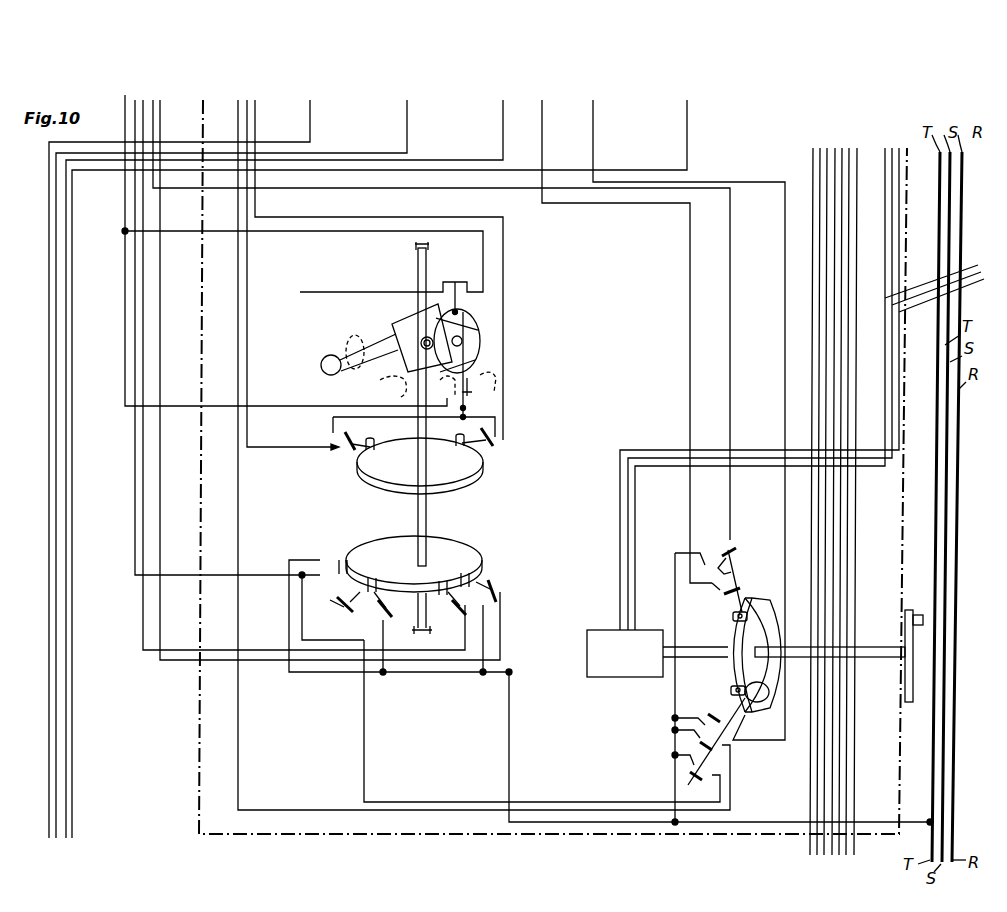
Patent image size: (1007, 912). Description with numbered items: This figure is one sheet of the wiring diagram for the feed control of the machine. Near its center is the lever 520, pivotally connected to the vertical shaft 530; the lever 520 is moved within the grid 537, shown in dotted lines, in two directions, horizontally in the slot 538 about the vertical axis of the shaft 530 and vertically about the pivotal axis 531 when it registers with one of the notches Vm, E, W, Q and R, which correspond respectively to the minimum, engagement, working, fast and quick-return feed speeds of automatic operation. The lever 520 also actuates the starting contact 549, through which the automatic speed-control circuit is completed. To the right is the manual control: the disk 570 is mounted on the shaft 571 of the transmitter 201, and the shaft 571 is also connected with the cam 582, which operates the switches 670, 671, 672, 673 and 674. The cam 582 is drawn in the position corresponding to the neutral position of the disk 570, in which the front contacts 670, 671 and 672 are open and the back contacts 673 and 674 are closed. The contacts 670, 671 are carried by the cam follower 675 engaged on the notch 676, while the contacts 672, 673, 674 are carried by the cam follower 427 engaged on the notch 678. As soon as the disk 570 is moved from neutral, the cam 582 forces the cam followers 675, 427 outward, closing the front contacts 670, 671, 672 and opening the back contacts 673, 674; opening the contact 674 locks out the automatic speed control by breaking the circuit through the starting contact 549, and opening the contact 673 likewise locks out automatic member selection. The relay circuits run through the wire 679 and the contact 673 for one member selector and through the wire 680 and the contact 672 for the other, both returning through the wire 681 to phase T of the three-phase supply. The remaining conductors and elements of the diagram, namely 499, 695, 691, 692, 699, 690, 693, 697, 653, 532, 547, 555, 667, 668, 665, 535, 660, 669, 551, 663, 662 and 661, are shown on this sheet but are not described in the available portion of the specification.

The dash-dot enclosure boundary 499 is at (197, 766).
The conductor 695 is at (125, 96).
The conductor 691 is at (330, 234).
The conductor 692 is at (124, 307).
The conductor 699 is at (153, 100).
The conductor 690 is at (161, 100).
The wire 679 is at (238, 100).
The conductor 693 is at (248, 100).
The conductor 697 is at (256, 133).
The wire 680 is at (594, 116).
The cable conductors 653 is at (899, 148).
The wire 681 is at (756, 828).
The shaft 532 is at (417, 312).
The contact 547 is at (462, 302).
The cam 555 is at (478, 338).
The lever 520 is at (333, 355).
The pivotal axis 531 is at (418, 340).
The slot 538 is at (422, 370).
The grid 537 is at (488, 383).
The starting contact 549 is at (466, 406).
The contact 667 is at (352, 437).
The contact 668 is at (488, 450).
The upper disc 665 is at (366, 472).
The shaft portion 535 is at (448, 524).
The vertical shaft 530 is at (428, 532).
The lower disc 660 is at (350, 560).
The conductor 669 is at (314, 560).
The contact 551 is at (340, 615).
The contact 663 is at (385, 618).
The contact 662 is at (460, 618).
The contact 661 is at (500, 590).
The transmitter 201 is at (625, 653).
The shaft 571 is at (692, 645).
The disk 570 is at (910, 660).
The cam 582 is at (752, 596).
The notch 676 is at (770, 614).
The cam follower 675 is at (732, 616).
The cam follower 427 is at (730, 690).
The notch 678 is at (758, 703).
The front contact 670 is at (732, 548).
The front contact 671 is at (738, 584).
The front contact 672 is at (702, 712).
The back contact 673 is at (696, 748).
The back contact 674 is at (690, 776).